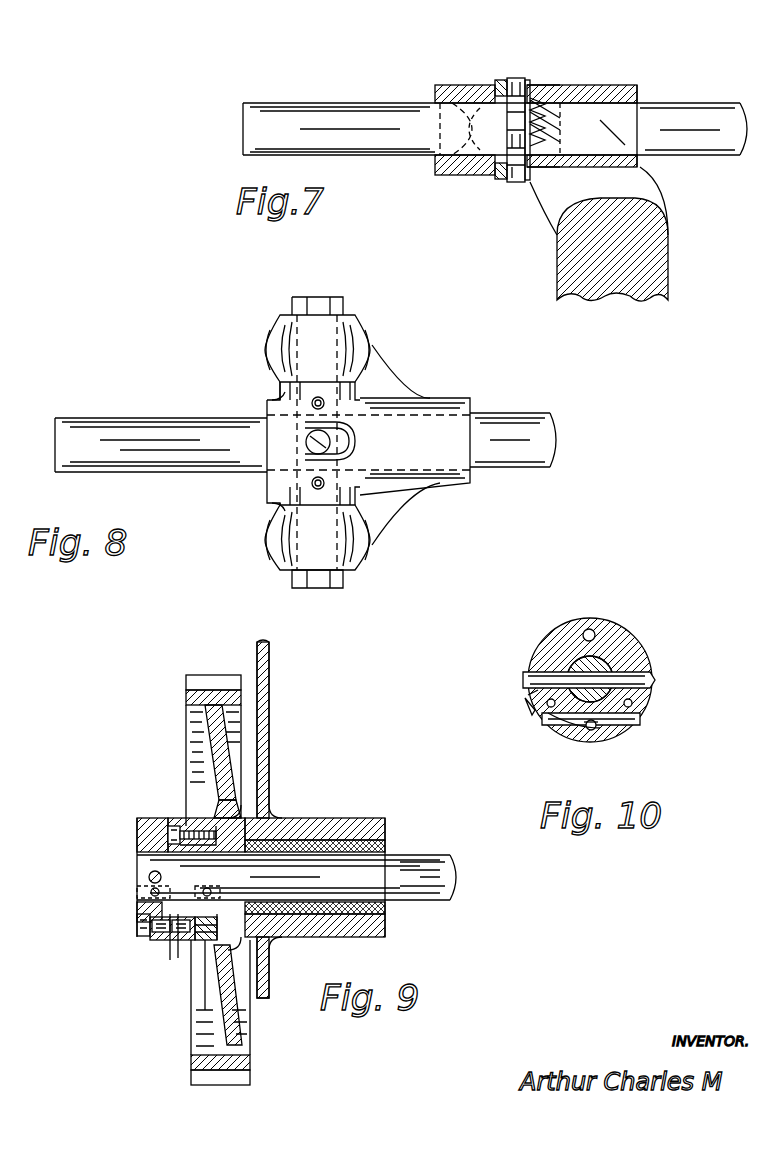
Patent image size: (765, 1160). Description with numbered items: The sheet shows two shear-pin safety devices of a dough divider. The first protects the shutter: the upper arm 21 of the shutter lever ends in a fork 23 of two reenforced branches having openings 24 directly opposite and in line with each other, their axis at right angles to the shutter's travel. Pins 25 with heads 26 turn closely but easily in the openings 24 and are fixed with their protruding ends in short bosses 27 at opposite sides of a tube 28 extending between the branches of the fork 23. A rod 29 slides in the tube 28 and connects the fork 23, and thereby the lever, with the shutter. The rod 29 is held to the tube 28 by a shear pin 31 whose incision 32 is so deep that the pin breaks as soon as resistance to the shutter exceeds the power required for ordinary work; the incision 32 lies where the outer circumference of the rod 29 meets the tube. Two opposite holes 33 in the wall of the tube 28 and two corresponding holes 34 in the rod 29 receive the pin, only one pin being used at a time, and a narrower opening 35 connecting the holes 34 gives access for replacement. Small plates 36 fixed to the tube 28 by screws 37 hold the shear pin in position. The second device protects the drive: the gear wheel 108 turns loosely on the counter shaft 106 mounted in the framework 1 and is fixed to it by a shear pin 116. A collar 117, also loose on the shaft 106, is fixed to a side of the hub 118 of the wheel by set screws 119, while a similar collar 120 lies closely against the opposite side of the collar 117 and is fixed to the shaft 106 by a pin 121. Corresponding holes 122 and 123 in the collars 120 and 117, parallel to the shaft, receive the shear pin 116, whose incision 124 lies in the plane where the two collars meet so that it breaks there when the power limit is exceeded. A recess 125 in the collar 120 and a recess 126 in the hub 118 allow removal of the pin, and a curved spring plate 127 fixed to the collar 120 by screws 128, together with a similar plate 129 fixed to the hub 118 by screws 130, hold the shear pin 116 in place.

In FIG. 9, the framework 1 is at (270, 682).
In FIG. 7, the upper arm 21 is at (562, 245).
In FIG. 8, the upper arm 21 is at (393, 352).
In FIG. 7, the fork 23 is at (440, 150).
In FIG. 8, the fork 23 is at (268, 345).
In FIG. 8, the openings 24 is at (338, 337).
In FIG. 7, the pins 25 is at (462, 112).
In FIG. 8, the pins 25 is at (312, 330).
In FIG. 8, the heads 26 is at (314, 297).
In FIG. 7, the bosses 27 is at (462, 172).
In FIG. 8, the bosses 27 is at (270, 400).
In FIG. 7, the tube 28 is at (604, 132).
In FIG. 8, the tube 28 is at (428, 398).
In FIG. 7, the rod 29 is at (373, 100).
In FIG. 8, the rod 29 is at (517, 413).
In FIG. 7, the shear pin 31 is at (540, 82).
In FIG. 7, the incision 32 is at (542, 118).
In FIG. 7, the holes 33 is at (528, 82).
In FIG. 7, the holes 34 is at (640, 100).
In FIG. 7, the opening 35 is at (560, 130).
In FIG. 7, the plates 36 is at (517, 78).
In FIG. 8, the plates 36 is at (340, 455).
In FIG. 7, the screws 37 is at (500, 80).
In FIG. 8, the screws 37 is at (306, 446).
In FIG. 9, the counter shaft 106 is at (448, 890).
In FIG. 9, the gear wheel 108 is at (186, 693).
In FIG. 10, the gear wheel 108 is at (622, 652).
In FIG. 9, the shear pin 116 is at (165, 946).
In FIG. 10, the shear pin 116 is at (605, 728).
In FIG. 9, the collar 117 is at (200, 826).
In FIG. 9, the hub 118 is at (212, 818).
In FIG. 9, the set screws 119 is at (172, 826).
In FIG. 10, the set screws 119 is at (590, 629).
In FIG. 9, the collar 120 is at (137, 831).
In FIG. 10, the collar 120 is at (640, 668).
In FIG. 9, the pin 121 is at (150, 875).
In FIG. 10, the pin 121 is at (522, 680).
In FIG. 9, the hole 122 is at (158, 940).
In FIG. 10, the hole 122 is at (591, 731).
In FIG. 9, the hole 123 is at (178, 955).
In FIG. 9, the incision 124 is at (170, 952).
In FIG. 9, the recess 125 is at (152, 935).
In FIG. 10, the recess 125 is at (625, 722).
In FIG. 9, the recess 126 is at (186, 960).
In FIG. 9, the spring plate 127 is at (137, 922).
In FIG. 10, the spring plate 127 is at (565, 727).
In FIG. 9, the screws 128 is at (137, 892).
In FIG. 10, the screws 128 is at (532, 713).
In FIG. 9, the plate 129 is at (212, 1010).
In FIG. 9, the screws 130 is at (205, 1022).